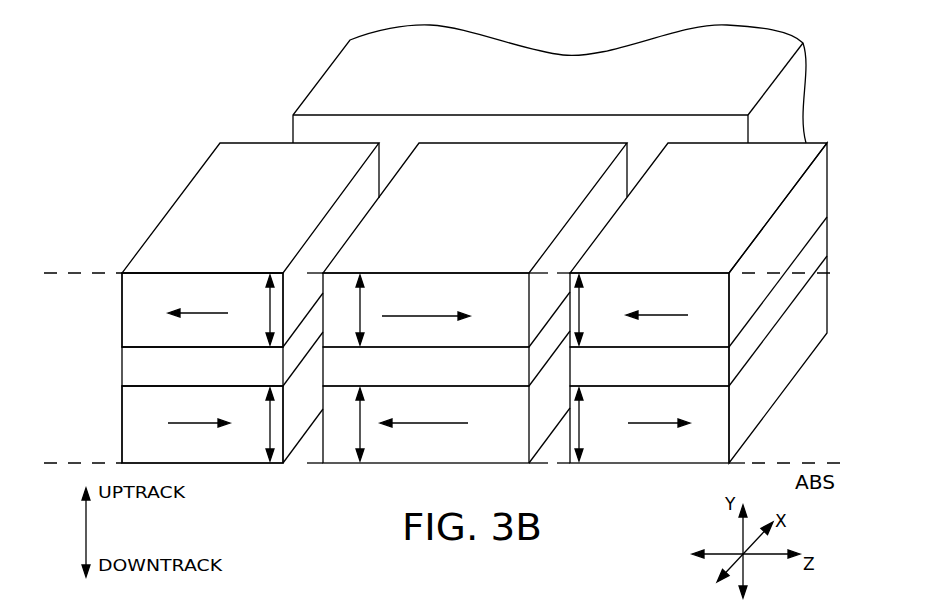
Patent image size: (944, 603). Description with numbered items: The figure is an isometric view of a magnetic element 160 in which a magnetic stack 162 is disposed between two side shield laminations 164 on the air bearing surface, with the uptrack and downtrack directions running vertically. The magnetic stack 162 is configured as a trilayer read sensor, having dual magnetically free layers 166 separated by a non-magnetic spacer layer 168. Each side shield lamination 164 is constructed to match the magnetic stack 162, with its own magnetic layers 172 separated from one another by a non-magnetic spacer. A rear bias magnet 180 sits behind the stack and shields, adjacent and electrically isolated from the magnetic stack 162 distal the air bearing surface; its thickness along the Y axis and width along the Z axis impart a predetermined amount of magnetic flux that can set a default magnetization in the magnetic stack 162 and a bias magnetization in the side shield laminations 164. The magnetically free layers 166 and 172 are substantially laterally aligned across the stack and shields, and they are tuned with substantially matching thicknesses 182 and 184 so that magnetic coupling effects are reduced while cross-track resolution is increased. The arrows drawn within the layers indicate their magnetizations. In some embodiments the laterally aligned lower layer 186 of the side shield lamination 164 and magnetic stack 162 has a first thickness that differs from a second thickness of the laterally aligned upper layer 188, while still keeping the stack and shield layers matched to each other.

The magnetic element 160 is at (160, 88).
The magnetic stack 162 is at (387, 268).
The side shield lamination 164 is at (163, 268).
The magnetically free layer 166 is at (426, 368).
The non-magnetic spacer layer 168 is at (426, 366).
The magnetic layer 172 is at (425, 368).
The rear bias magnet 180 is at (549, 84).
The thickness 182 is at (399, 368).
The thickness 184 is at (429, 368).
The lower layer 186 is at (116, 424).
The upper layer 188 is at (116, 311).